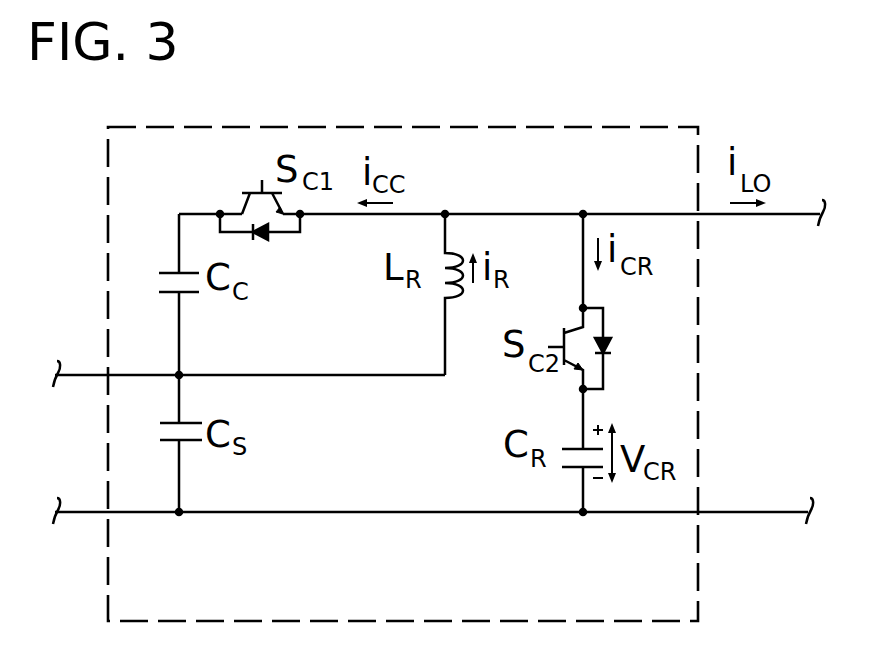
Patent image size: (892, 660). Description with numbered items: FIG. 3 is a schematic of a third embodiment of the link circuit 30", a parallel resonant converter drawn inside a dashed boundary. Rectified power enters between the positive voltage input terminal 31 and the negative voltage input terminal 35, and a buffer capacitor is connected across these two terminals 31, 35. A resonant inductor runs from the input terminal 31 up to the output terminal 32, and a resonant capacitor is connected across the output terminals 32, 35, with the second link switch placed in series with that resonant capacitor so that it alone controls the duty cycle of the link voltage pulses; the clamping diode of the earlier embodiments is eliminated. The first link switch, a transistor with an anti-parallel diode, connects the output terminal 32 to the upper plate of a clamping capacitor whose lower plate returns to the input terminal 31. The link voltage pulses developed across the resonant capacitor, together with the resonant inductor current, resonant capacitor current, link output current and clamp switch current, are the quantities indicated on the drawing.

The link circuit 30 is at (403, 351).
The positive voltage input terminal 31 is at (179, 373).
The output terminal 32 is at (583, 213).
The negative voltage input terminal 35 is at (179, 512).